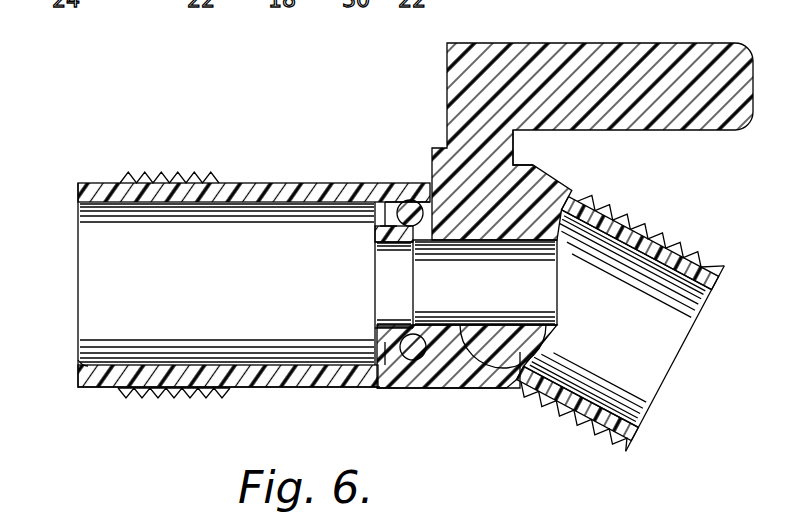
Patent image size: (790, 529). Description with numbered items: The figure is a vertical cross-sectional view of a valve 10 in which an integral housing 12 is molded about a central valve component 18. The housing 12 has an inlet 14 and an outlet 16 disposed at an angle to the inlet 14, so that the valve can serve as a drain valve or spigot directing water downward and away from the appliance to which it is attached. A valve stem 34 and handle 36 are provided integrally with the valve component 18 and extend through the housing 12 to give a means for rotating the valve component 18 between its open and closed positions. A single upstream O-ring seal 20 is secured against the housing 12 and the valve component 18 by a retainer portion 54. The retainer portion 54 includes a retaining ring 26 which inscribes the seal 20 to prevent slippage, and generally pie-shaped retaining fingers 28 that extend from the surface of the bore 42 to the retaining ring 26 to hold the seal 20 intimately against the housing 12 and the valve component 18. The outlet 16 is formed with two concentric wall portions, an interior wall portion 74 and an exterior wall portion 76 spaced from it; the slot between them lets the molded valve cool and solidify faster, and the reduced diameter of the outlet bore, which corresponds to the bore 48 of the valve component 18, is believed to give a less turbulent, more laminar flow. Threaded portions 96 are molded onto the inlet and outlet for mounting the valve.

The valve 10 is at (216, 138).
The housing 12 is at (289, 377).
The inlet 14 is at (160, 301).
The outlet 16 is at (645, 349).
The valve component 18 is at (504, 390).
The upstream O-ring seal 20 is at (406, 200).
The retaining ring 26 is at (398, 360).
The retaining fingers 28 is at (388, 238).
The valve stem 34 is at (490, 165).
The handle 36 is at (599, 58).
The bore 42 is at (88, 362).
The bore of the valve component 48 is at (502, 300).
The retainer portion 54 is at (378, 198).
The interior wall portion 74 is at (712, 296).
The exterior wall portion 76 is at (712, 262).
The threaded portions 96 is at (180, 400).